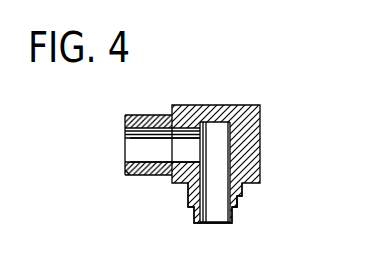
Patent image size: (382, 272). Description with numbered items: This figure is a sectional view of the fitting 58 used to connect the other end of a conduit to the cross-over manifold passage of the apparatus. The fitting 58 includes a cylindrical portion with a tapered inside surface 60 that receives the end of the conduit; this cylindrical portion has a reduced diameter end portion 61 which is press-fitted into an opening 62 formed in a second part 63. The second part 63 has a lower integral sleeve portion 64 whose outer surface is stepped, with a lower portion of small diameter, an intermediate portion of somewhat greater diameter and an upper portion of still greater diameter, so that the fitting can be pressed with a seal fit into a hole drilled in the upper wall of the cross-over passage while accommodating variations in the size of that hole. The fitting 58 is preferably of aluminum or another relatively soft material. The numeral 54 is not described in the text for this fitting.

The tubular fitting 54 is at (145, 115).
The fitting 58 is at (264, 112).
The tapered inside surface 60 is at (144, 156).
The reduced diameter end portion 61 is at (188, 183).
The opening 62 is at (185, 120).
The second part 63 is at (252, 151).
The sleeve portion 64 is at (238, 204).